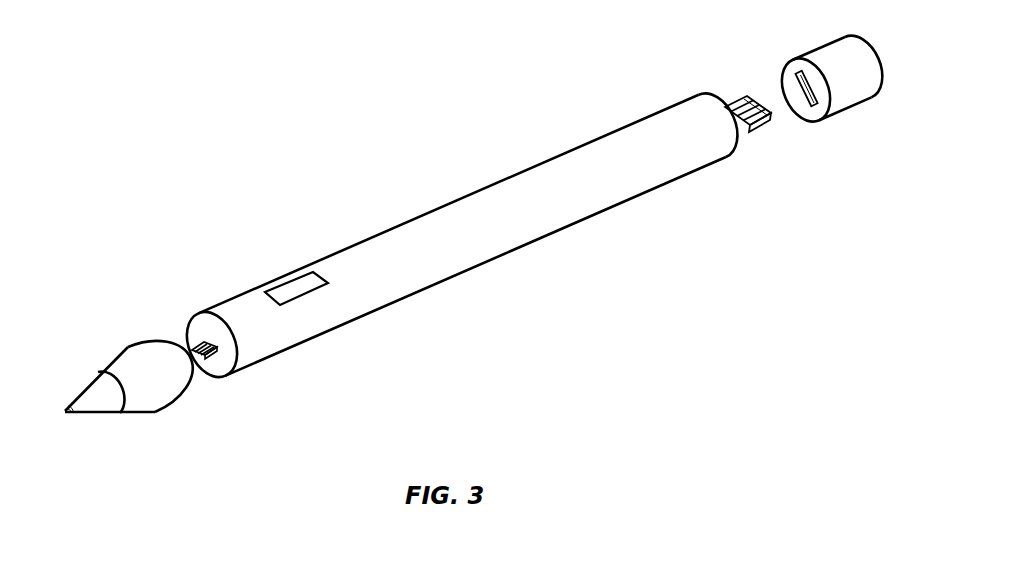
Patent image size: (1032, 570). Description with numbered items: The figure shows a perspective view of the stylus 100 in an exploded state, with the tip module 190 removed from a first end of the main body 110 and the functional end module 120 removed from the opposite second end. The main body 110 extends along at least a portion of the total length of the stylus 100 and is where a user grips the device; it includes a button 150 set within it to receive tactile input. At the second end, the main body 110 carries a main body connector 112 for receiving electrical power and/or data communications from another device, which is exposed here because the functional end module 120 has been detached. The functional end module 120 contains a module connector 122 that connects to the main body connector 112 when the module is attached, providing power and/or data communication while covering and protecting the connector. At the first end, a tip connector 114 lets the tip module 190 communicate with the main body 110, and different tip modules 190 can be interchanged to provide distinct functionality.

The stylus 100 is at (403, 142).
The main body 110 is at (543, 238).
The main body connector 112 is at (752, 128).
The tip connector 114 is at (213, 360).
The functional end module 120 is at (855, 110).
The module connector 122 is at (810, 102).
The button 150 is at (328, 277).
The tip module 190 is at (66, 413).